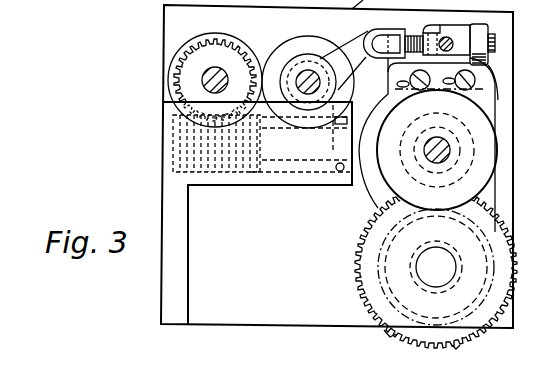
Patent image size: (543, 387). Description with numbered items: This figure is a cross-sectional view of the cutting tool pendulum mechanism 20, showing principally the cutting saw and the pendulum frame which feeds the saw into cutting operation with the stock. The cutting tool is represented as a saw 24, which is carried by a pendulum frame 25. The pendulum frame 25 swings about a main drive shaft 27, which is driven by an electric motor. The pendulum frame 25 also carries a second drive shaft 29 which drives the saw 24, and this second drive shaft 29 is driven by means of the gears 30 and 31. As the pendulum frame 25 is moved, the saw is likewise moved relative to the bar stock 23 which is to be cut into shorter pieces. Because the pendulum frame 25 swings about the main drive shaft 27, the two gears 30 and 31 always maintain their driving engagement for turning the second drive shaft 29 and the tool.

The cutting tool pendulum mechanism 20 is at (331, 356).
The stock of material 23 is at (455, 351).
The saw 24 is at (380, 337).
The pendulum frame 25 is at (489, 122).
The main drive shaft 27 is at (446, 148).
The second drive shaft 29 is at (447, 270).
The gear 30 is at (371, 193).
The gear 31 is at (374, 266).